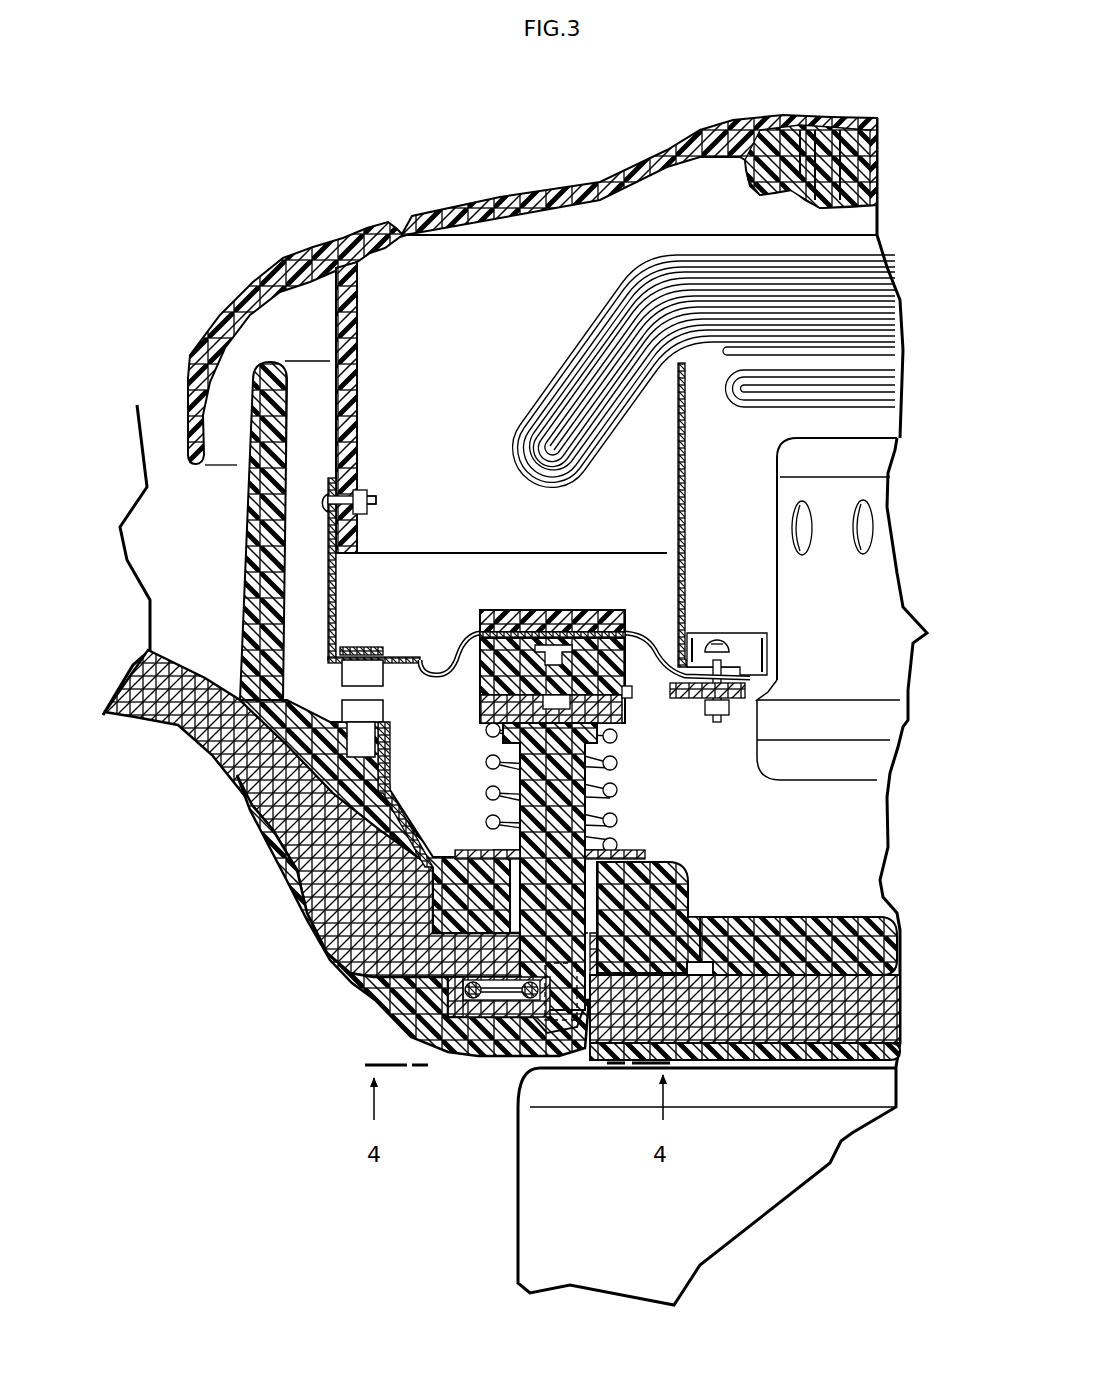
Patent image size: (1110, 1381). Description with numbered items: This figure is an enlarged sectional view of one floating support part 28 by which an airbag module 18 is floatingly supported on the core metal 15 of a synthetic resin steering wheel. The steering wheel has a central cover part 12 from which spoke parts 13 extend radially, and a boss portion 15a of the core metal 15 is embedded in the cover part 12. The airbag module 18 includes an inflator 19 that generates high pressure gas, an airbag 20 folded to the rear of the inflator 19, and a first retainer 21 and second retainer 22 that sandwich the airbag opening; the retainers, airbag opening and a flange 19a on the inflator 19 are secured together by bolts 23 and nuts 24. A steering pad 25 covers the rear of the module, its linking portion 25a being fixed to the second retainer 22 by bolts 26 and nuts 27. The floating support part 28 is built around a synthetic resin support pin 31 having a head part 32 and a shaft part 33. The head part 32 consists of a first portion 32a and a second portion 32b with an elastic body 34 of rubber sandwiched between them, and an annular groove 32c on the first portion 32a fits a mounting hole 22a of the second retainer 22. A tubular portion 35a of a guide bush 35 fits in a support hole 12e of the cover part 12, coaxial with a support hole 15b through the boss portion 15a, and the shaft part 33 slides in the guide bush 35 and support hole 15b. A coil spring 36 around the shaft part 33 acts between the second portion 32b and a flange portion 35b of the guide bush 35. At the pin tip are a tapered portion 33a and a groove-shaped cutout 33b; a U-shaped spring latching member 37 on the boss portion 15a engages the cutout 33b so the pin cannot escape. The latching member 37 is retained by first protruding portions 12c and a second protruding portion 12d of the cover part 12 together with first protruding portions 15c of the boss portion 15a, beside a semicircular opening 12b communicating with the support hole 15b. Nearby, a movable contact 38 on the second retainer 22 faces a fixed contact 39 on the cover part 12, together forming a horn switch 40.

The cover part 12 is at (745, 1070).
The semicircular opening 12b is at (600, 1068).
The first protruding portion 12c is at (470, 1060).
The second protruding portion 12d is at (540, 1012).
The support hole 12e is at (605, 850).
The spoke part 13 is at (142, 723).
The core metal 15 is at (805, 968).
The boss portion 15a is at (775, 1027).
The support hole 15b is at (582, 1062).
The first protruding portion 15c is at (455, 1052).
The airbag module 18 is at (388, 198).
The inflator 19 is at (828, 623).
The flange 19a is at (688, 690).
The airbag 20 is at (578, 400).
The first retainer 21 is at (748, 655).
The second retainer 22 is at (655, 636).
The mounting hole 22a is at (540, 632).
The bolt 23 is at (717, 646).
The nut 24 is at (736, 700).
The steering pad 25 is at (765, 112).
The linking portion 25a is at (350, 438).
The bolt 26 is at (320, 498).
The nut 27 is at (362, 494).
The floating support part 28 is at (583, 604).
The support pin 31 is at (515, 604).
The head part 32 is at (600, 610).
The first portion 32a is at (500, 608).
The second portion 32b is at (482, 720).
The annular groove 32c is at (630, 688).
The shaft part 33 is at (590, 812).
The tapered portion 33a is at (560, 1036).
The cutout 33b is at (400, 997).
The elastic body 34 is at (480, 670).
The guide bush 35 is at (645, 900).
The tubular portion 35a is at (692, 912).
The flange portion 35b is at (478, 850).
The coil spring 36 is at (490, 790).
The latching member 37 is at (498, 1002).
The movable contact 38 is at (366, 668).
The fixed contact 39 is at (365, 708).
The horn switch 40 is at (353, 600).